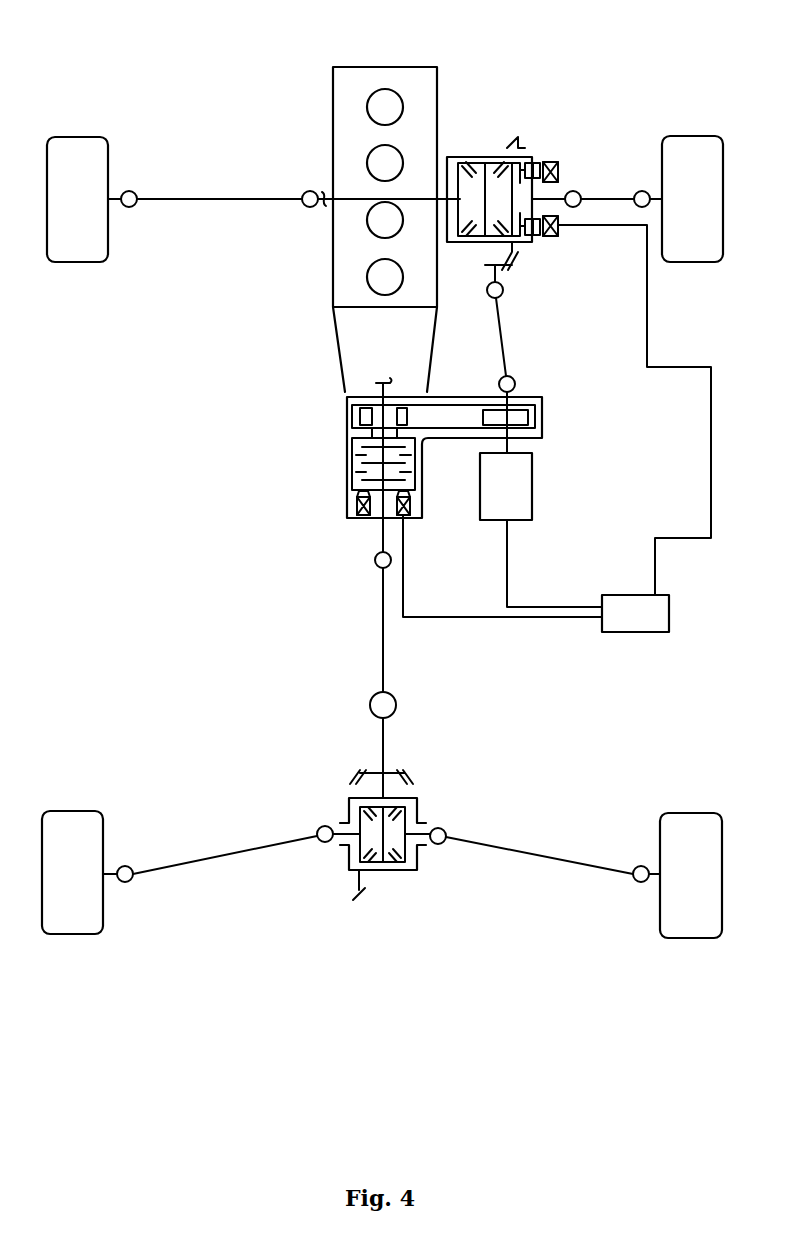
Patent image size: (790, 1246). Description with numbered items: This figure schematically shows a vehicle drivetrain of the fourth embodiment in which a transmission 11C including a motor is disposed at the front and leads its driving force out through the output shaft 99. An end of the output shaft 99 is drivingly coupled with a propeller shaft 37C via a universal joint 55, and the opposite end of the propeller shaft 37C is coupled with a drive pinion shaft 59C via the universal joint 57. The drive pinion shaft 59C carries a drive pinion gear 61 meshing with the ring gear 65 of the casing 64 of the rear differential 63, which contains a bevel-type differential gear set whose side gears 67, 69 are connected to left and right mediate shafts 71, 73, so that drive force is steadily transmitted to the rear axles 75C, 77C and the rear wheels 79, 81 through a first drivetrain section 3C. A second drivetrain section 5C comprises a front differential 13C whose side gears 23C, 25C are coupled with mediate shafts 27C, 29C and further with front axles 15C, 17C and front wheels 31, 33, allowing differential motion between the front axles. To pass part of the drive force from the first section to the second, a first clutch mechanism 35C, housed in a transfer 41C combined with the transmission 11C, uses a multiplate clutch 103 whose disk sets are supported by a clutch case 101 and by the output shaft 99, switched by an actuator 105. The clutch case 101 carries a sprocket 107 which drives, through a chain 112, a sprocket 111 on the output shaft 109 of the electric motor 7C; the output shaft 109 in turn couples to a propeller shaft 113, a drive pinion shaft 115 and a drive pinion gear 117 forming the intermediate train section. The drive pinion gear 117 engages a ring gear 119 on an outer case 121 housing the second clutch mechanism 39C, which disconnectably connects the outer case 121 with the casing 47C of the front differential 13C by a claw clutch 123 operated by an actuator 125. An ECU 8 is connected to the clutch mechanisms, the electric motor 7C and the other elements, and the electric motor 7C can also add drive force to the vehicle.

The first drivetrain section 3C is at (377, 670).
The second drivetrain section 5C is at (437, 455).
The electric motor 7C is at (532, 502).
The ECU 8 is at (633, 634).
The transmission 11C is at (345, 358).
The front differential 13C is at (392, 139).
The left front axle 15C is at (166, 196).
The right front axle 17C is at (612, 197).
The side gear 23C is at (473, 188).
The side gear 25C is at (503, 192).
The mediate shaft 27C is at (478, 190).
The mediate shaft 29C is at (575, 190).
The front wheel 31 is at (77, 136).
The front wheel 33 is at (688, 135).
The first clutch mechanism 35C is at (320, 495).
The propeller shaft 37C is at (392, 660).
The second clutch mechanism 39C is at (545, 126).
The transfer 41C is at (546, 412).
The casing 47C is at (450, 160).
The universal joint 55 is at (375, 565).
The universal joint 57 is at (397, 704).
The drive pinion shaft 59C is at (382, 733).
The drive pinion gear 61 is at (370, 766).
The rear differential 63 is at (371, 895).
The casing 64 is at (378, 870).
The ring gear 65 is at (358, 900).
The side gear 67 is at (347, 850).
The side gear 69 is at (418, 850).
The left mediate shaft 71 is at (338, 828).
The right mediate shaft 73 is at (424, 825).
The left rear axle 75C is at (184, 860).
The right rear axle 77C is at (557, 848).
The rear wheel 79 is at (74, 810).
The rear wheel 81 is at (690, 812).
The output shaft 99 is at (376, 383).
The clutch case 101 is at (347, 440).
The multiplate clutch 103 is at (358, 478).
The actuator 105 is at (357, 505).
The sprocket 107 is at (405, 413).
The output shaft 109 is at (548, 437).
The sprocket 111 is at (520, 413).
The chain 112 is at (447, 432).
The propeller shaft 113 is at (510, 330).
The drive pinion shaft 115 is at (505, 290).
The drive pinion gear 117 is at (483, 265).
The ring gear 119 is at (520, 258).
The outer case 121 is at (490, 162).
The claw clutch 123 is at (522, 153).
The actuator 125 is at (553, 160).